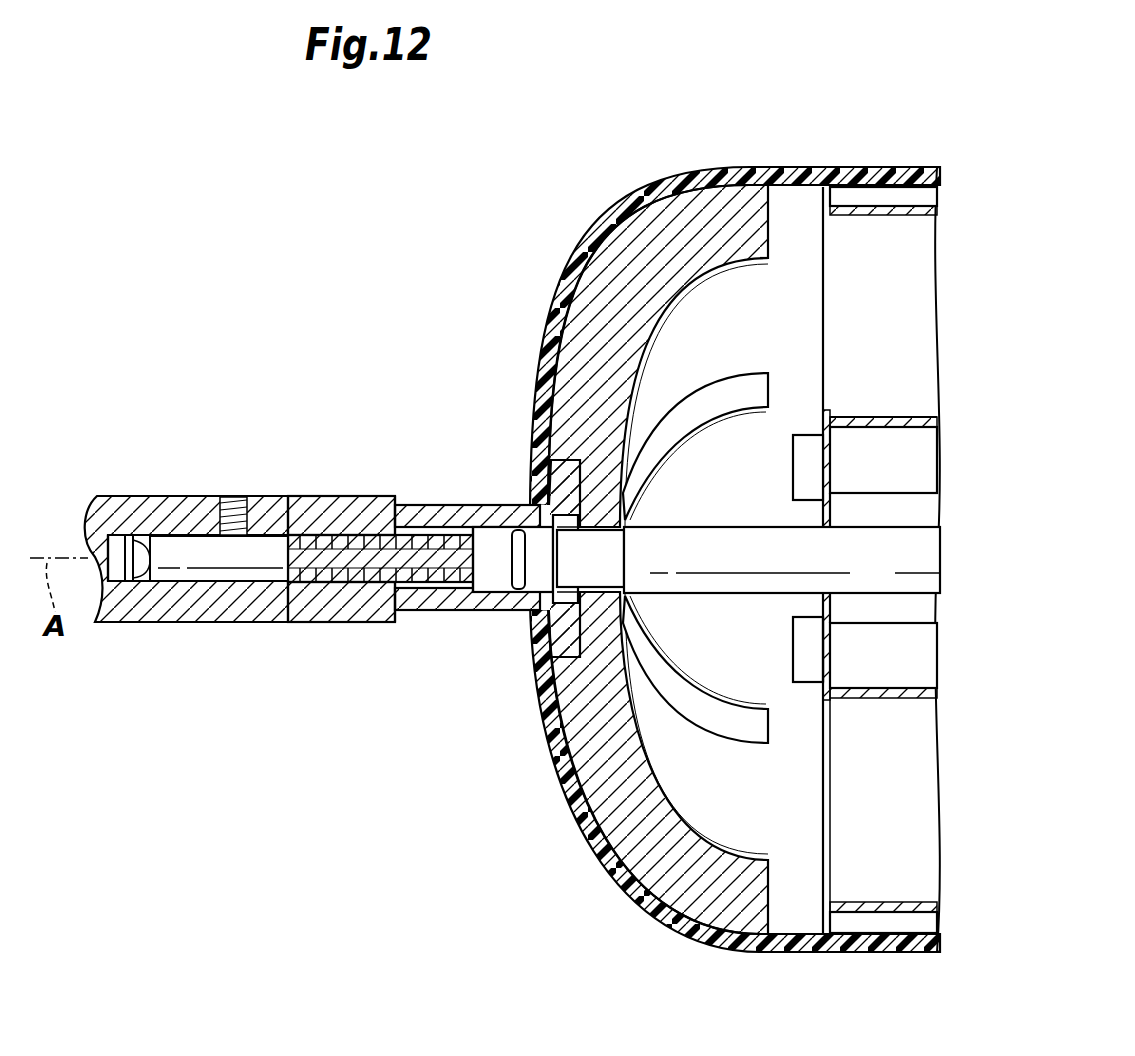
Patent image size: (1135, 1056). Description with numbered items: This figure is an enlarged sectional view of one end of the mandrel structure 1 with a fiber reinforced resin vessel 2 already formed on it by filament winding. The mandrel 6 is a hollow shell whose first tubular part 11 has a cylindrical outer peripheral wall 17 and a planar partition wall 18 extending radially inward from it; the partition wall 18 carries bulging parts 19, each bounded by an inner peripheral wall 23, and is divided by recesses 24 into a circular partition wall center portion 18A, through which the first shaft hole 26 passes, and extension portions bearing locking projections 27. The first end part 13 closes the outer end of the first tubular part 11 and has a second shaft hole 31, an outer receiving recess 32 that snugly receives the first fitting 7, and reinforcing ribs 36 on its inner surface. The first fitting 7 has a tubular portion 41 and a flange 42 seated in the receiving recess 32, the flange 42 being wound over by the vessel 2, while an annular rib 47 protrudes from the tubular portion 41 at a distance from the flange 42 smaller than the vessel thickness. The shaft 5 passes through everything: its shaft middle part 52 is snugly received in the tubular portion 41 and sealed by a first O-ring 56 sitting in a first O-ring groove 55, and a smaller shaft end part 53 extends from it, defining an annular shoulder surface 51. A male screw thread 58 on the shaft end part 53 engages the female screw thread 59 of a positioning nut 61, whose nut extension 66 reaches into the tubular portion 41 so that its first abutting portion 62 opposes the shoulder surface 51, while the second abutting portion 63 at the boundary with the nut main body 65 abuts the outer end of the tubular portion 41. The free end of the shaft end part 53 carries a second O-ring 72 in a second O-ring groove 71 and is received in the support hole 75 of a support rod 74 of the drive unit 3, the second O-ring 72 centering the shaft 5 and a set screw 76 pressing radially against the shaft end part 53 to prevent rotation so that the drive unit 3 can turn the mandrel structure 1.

The mandrel structure 1 is at (356, 358).
The fiber reinforced resin vessel 2 is at (812, 180).
The drive unit 3 is at (153, 640).
The shaft 5 is at (760, 512).
The mandrel 6 is at (660, 887).
The first fitting 7 is at (430, 645).
The first tubular part 11 is at (904, 172).
The first end part 13 is at (719, 185).
The outer peripheral wall 17 is at (878, 932).
The partition wall 18 is at (835, 672).
The partition wall center portion 18A is at (820, 650).
The bulging part 19 is at (900, 428).
The inner peripheral wall 23 is at (856, 428).
The recess 24 is at (906, 702).
The first shaft hole 26 is at (830, 527).
The locking projection 27 is at (803, 680).
The second shaft hole 31 is at (632, 518).
The receiving recess 32 is at (548, 657).
The reinforcing rib 36 is at (680, 826).
The tubular portion 41 is at (437, 503).
The flange 42 is at (555, 457).
The annular rib 47 is at (543, 617).
The annular shoulder surface 51 is at (473, 530).
The shaft middle part 52 is at (677, 595).
The shaft end part 53 is at (244, 567).
The first O-ring groove 55 is at (512, 532).
The first O-ring 56 is at (507, 594).
The male screw thread 58 is at (328, 535).
The female screw thread 59 is at (292, 540).
The positioning nut 61 is at (306, 640).
The first abutting portion 62 is at (470, 612).
The second abutting portion 63 is at (405, 520).
The nut main body 65 is at (343, 622).
The nut extension 66 is at (415, 622).
The second O-ring groove 71 is at (147, 537).
The second O-ring 72 is at (122, 582).
The support rod 74 is at (197, 622).
The support hole 75 is at (178, 545).
The set screw 76 is at (232, 497).